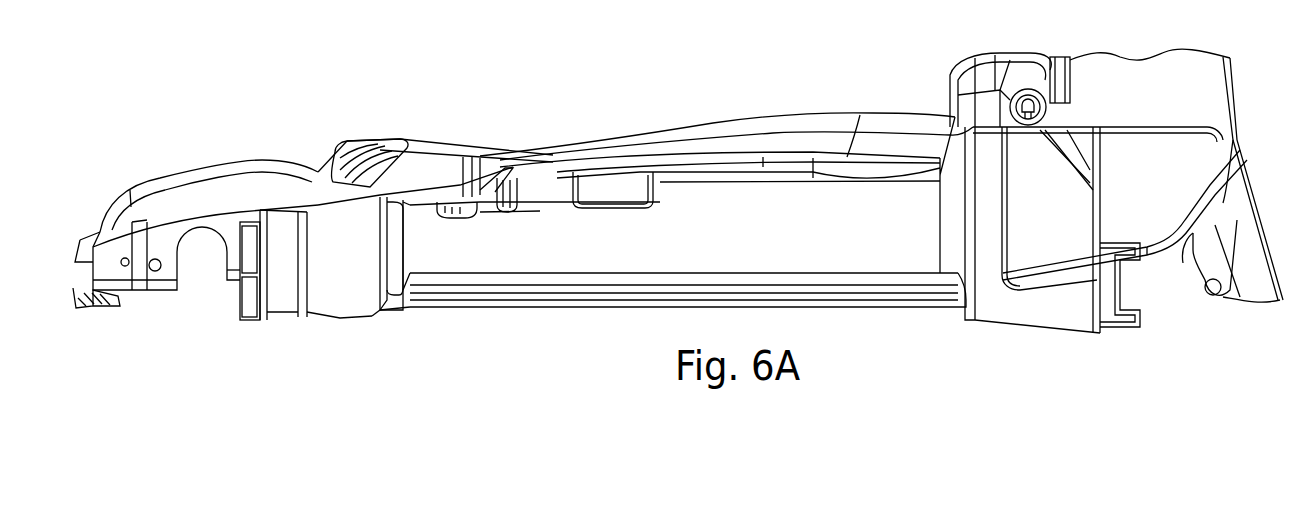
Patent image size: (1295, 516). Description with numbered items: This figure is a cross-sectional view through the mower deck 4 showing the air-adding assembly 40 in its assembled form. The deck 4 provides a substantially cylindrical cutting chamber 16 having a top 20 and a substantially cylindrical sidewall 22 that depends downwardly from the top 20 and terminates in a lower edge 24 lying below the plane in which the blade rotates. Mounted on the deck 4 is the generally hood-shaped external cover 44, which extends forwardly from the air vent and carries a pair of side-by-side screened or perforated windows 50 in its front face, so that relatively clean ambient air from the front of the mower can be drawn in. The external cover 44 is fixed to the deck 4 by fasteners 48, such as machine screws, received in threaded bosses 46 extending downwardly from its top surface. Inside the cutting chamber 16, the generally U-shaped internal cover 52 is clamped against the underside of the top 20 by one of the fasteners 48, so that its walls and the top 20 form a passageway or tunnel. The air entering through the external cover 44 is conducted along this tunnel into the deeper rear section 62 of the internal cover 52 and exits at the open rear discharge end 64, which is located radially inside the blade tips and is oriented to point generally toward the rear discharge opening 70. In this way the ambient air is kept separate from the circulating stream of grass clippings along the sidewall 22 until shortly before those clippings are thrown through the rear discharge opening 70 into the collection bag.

The deck 4 is at (755, 85).
The cutting chamber 16 is at (714, 124).
The top 20 is at (822, 123).
The sidewall 22 is at (671, 224).
The lower edge 24 is at (810, 308).
The assembly 40 is at (352, 128).
The external cover 44 is at (447, 150).
The threaded bosses 46 is at (470, 180).
The fasteners 48 is at (475, 212).
The screened or perforated windows 50 is at (373, 160).
The internal cover 52 is at (515, 218).
The rear section 62 is at (532, 188).
The rear discharge end 64 is at (615, 188).
The rear discharge opening 70 is at (1052, 230).